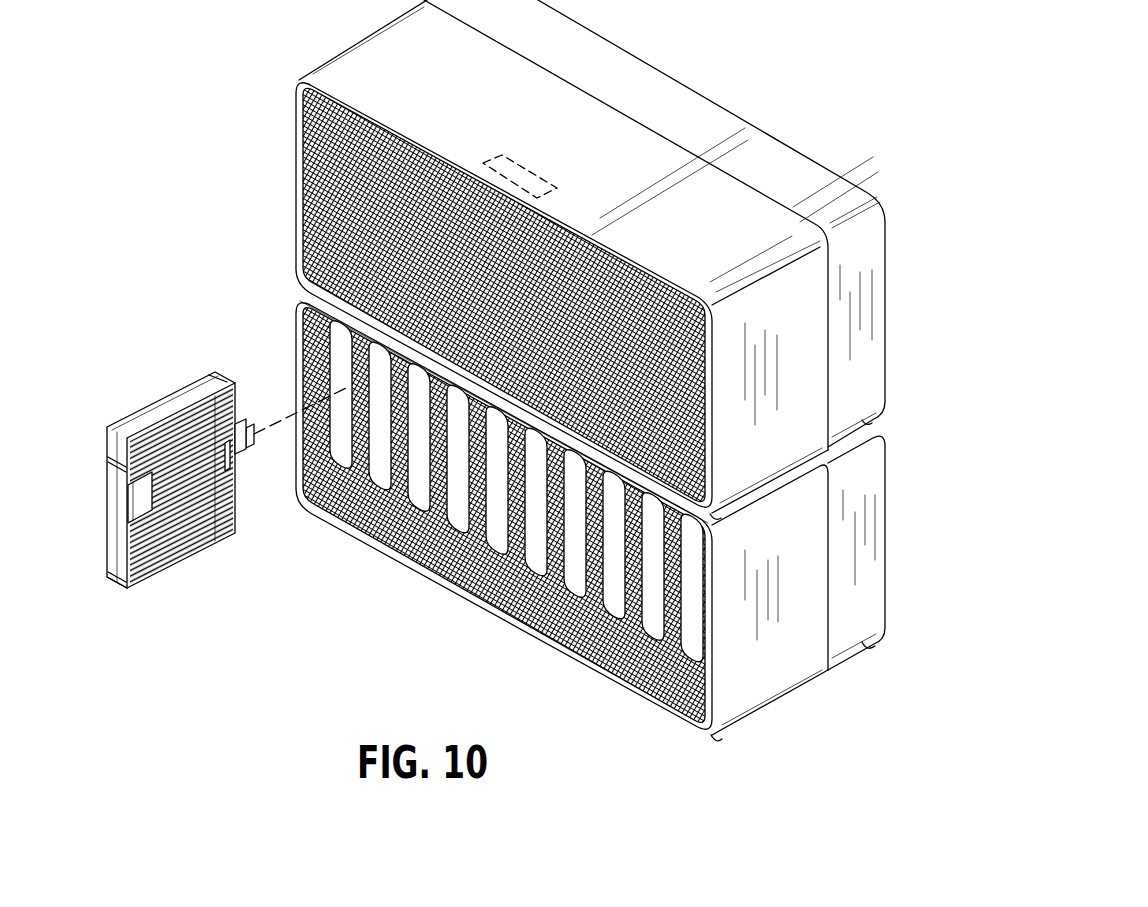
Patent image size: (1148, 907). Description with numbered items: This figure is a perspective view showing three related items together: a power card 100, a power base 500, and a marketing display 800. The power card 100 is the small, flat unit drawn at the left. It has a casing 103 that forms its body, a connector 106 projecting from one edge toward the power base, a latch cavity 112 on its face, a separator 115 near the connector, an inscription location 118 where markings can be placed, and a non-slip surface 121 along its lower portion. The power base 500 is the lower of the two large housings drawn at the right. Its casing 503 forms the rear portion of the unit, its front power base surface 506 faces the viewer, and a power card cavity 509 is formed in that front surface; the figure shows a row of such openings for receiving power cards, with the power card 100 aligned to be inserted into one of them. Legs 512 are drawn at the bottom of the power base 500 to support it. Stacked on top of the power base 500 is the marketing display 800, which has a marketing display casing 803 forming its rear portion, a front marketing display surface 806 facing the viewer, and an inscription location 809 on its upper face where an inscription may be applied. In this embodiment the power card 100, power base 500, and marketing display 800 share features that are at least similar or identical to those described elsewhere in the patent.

The power card 100 is at (136, 392).
The casing 103 is at (218, 377).
The connector 106 is at (250, 428).
The latch cavity 112 is at (217, 447).
The separator 115 is at (246, 452).
The inscription location 118 is at (137, 520).
The non-slip surface 121 is at (144, 580).
The power base 500 is at (769, 724).
The casing 503 is at (842, 605).
The front power base surface 506 is at (335, 481).
The power card cavity 509 is at (346, 341).
The legs 512 is at (716, 745).
The marketing display 800 is at (670, 58).
The marketing display casing 803 is at (866, 240).
The front marketing display surface 806 is at (323, 194).
The inscription location 809 is at (522, 178).